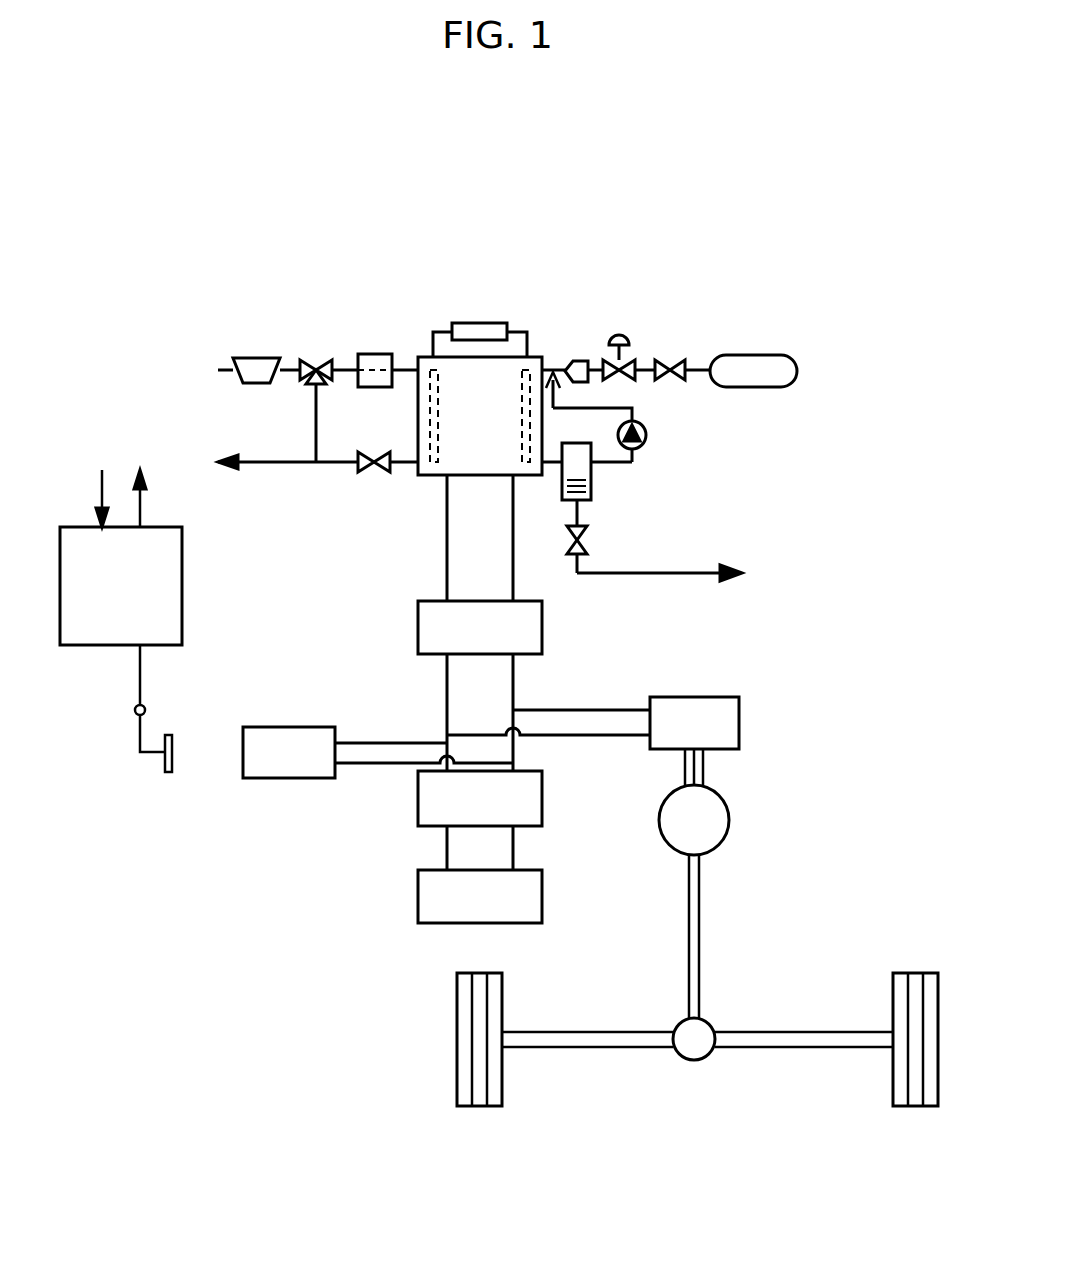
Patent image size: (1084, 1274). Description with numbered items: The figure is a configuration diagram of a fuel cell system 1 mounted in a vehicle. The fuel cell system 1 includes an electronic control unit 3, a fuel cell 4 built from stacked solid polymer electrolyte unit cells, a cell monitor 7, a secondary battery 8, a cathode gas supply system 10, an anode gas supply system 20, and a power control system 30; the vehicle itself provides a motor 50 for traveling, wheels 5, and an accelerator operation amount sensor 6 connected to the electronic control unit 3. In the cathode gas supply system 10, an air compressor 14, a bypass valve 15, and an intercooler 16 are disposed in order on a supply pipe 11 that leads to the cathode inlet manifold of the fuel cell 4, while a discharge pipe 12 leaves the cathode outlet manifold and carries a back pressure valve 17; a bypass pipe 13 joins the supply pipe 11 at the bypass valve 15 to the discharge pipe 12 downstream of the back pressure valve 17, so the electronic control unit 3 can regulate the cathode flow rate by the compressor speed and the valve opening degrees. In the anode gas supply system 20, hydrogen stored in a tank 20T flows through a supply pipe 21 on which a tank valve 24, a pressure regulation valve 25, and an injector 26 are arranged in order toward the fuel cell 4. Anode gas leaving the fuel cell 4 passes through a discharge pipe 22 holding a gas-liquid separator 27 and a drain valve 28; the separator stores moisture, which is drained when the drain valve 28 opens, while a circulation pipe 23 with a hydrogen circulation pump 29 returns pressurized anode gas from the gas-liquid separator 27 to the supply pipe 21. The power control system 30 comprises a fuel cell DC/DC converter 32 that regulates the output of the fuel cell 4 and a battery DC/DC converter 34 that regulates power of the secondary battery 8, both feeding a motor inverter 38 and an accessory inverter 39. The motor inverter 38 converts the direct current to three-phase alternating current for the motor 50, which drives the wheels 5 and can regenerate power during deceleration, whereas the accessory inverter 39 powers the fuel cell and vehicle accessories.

The fuel cell system 1 is at (641, 181).
The electronic control unit 3 is at (182, 595).
The fuel cell 4 is at (474, 477).
The wheels 5 is at (457, 1068).
The accelerator operation amount sensor 6 is at (146, 710).
The cell monitor 7 is at (478, 323).
The secondary battery 8 is at (418, 900).
The cathode gas supply system 10 is at (320, 322).
The supply pipe 11 is at (404, 372).
The discharge pipe 12 is at (333, 463).
The bypass pipe 13 is at (316, 437).
The air compressor 14 is at (233, 357).
The bypass valve 15 is at (307, 380).
The intercooler 16 is at (378, 354).
The back pressure valve 17 is at (370, 455).
The anode gas supply system 20 is at (650, 288).
The tank 20T is at (742, 355).
The supply pipe 21 is at (640, 373).
The discharge pipe 22 is at (702, 572).
The circulation pipe 23 is at (606, 465).
The tank valve 24 is at (677, 362).
The pressure regulation valve 25 is at (619, 335).
The injector 26 is at (575, 361).
The gas-liquid separator 27 is at (562, 472).
The drain valve 28 is at (587, 542).
The hydrogen circulation pump 29 is at (643, 449).
The power control system 30 is at (290, 843).
The fuel cell DC/DC converter 32 is at (418, 633).
The battery DC/DC converter 34 is at (418, 803).
The motor inverter 38 is at (715, 697).
The accessory inverter 39 is at (268, 727).
The motor 50 is at (725, 830).